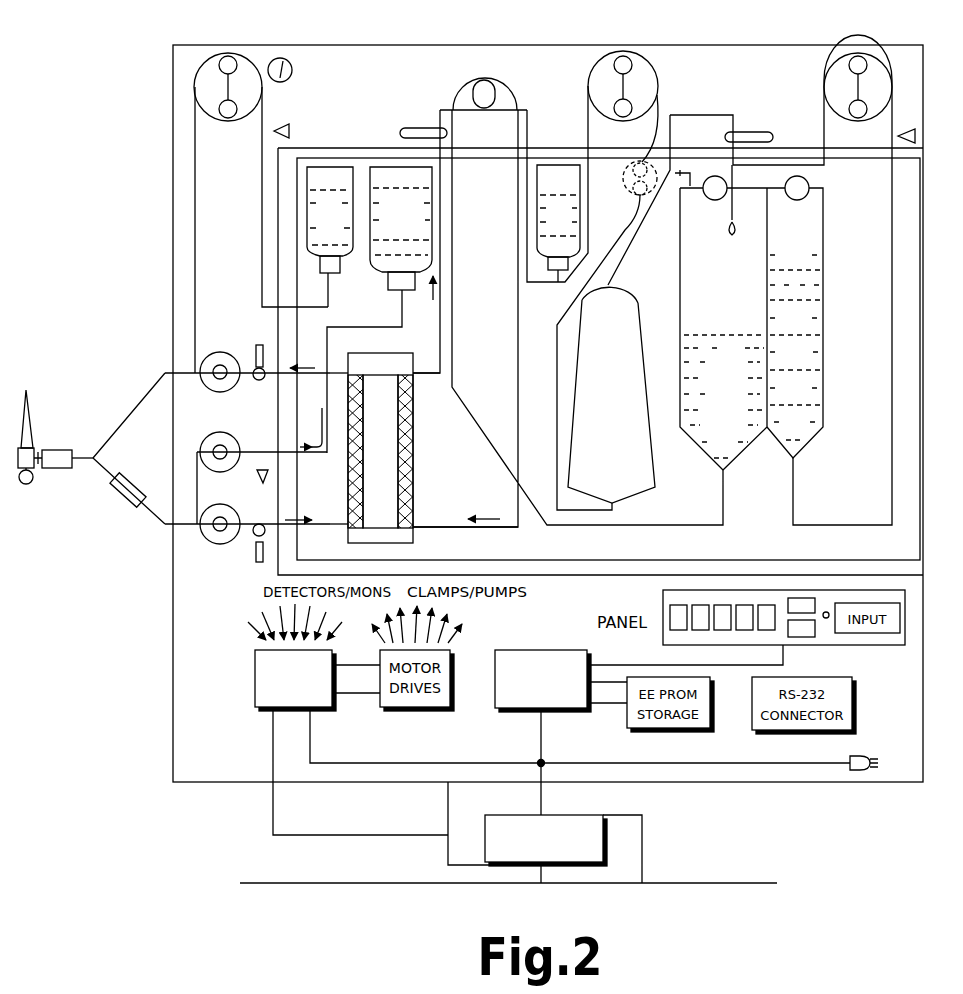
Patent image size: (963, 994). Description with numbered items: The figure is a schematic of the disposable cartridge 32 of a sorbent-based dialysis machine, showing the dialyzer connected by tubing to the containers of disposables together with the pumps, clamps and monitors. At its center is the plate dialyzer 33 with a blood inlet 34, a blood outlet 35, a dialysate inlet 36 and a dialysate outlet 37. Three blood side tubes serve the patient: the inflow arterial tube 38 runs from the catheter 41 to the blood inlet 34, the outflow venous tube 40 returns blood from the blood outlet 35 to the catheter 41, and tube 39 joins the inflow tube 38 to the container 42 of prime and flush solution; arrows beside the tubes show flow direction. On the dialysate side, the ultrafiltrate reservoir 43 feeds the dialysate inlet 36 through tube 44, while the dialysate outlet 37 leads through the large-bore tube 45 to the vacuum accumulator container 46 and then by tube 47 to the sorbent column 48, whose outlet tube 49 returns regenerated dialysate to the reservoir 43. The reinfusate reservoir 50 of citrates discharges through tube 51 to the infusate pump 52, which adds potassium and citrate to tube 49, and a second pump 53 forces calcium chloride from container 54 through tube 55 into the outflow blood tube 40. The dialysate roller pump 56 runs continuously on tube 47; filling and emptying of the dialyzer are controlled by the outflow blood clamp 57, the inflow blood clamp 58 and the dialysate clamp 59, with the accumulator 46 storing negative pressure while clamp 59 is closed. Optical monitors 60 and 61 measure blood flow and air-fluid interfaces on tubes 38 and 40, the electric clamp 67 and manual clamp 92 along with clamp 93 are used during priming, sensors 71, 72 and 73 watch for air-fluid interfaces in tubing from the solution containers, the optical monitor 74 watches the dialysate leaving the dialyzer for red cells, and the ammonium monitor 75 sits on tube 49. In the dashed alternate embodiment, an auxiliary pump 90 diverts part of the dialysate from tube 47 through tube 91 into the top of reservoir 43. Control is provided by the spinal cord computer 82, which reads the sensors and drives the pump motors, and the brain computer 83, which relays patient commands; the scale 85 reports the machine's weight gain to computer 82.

The disposable cartridge 32 is at (905, 230).
The plate dialyzer 33 is at (390, 488).
The blood inlet 34 is at (345, 524).
The blood outlet 35 is at (348, 372).
The dialysate inlet 36 is at (417, 522).
The dialysate outlet 37 is at (415, 374).
The inflow arterial blood tube 38 is at (160, 523).
The prime tube 39 is at (196, 472).
The outflow venous tube 40 is at (140, 404).
The catheter 41 is at (30, 422).
The prime and flush solution container 42 is at (395, 172).
The ultrafiltrate reservoir 43 is at (680, 313).
The dialysate inflow tube 44 is at (518, 366).
The dialysate outflow tube 45 is at (437, 333).
The vacuum accumulator container 46 is at (555, 173).
The dialysate tube 47 is at (588, 122).
The sorbent column 48 is at (653, 472).
The column outlet tube 49 is at (703, 113).
The reinfusate reservoir 50 is at (823, 372).
The reinfusate tube 51 is at (890, 285).
The infusate pump 52 is at (844, 70).
The calcium chloride pump 53 is at (215, 72).
The calcium chloride container 54 is at (347, 173).
The calcium chloride tube 55 is at (195, 183).
The dialysate roller pump 56 is at (612, 74).
The outflow blood clamp 57 is at (214, 352).
The inflow blood clamp 58 is at (220, 546).
The dialysate clamp 59 is at (486, 92).
The optical flow monitor 60 is at (256, 560).
The optical flow monitor 61 is at (258, 345).
The electric clamp 67 is at (237, 438).
The air-fluid interface sensor 71 is at (257, 477).
The air-fluid interface sensor 72 is at (289, 130).
The air-fluid interface sensor 73 is at (902, 132).
The blood leak optical monitor 74 is at (423, 127).
The ammonium monitor 75 is at (752, 128).
The spinal cord computer 82 is at (255, 692).
The brain computer 83 is at (538, 650).
The scale 85 is at (599, 815).
The auxiliary pump 90 is at (622, 178).
The bypass tube 91 is at (672, 178).
The manual clamp 92 is at (55, 470).
The clamp 93 is at (122, 501).